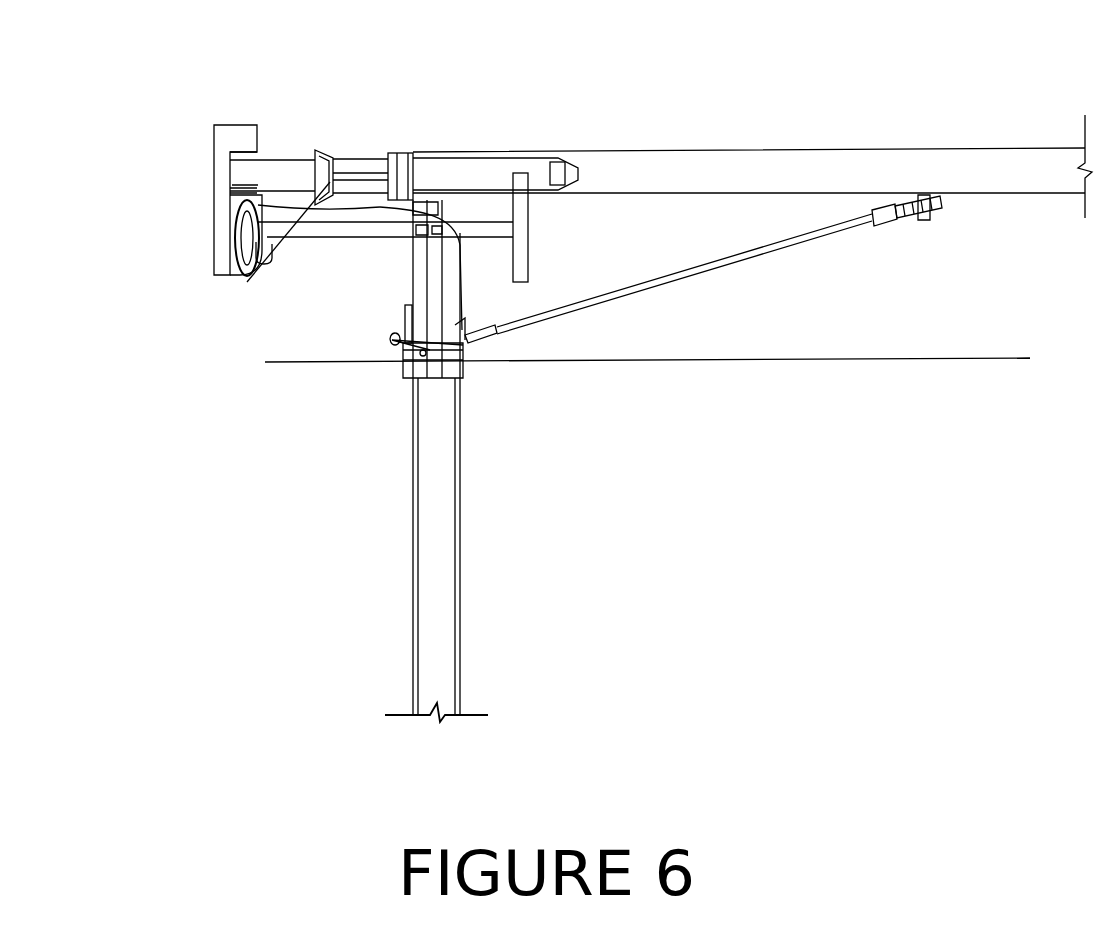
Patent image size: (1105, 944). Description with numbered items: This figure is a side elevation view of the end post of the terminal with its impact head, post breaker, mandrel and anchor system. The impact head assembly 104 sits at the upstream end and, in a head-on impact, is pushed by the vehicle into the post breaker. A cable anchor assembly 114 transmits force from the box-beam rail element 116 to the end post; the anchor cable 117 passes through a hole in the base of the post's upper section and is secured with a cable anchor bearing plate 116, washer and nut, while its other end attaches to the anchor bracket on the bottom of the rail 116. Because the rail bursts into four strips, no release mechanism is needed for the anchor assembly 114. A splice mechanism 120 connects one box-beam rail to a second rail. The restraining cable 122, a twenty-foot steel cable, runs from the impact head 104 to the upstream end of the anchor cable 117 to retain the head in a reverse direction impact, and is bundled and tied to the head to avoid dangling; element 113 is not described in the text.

The impact head assembly 104 is at (214, 197).
The tie rod 113 is at (668, 282).
The cable anchor assembly 114 is at (473, 352).
The box-beam rail element 116 is at (892, 167).
The anchor cable 117 is at (930, 223).
The splice mechanism 120 is at (530, 246).
The restraining cable 122 is at (247, 282).